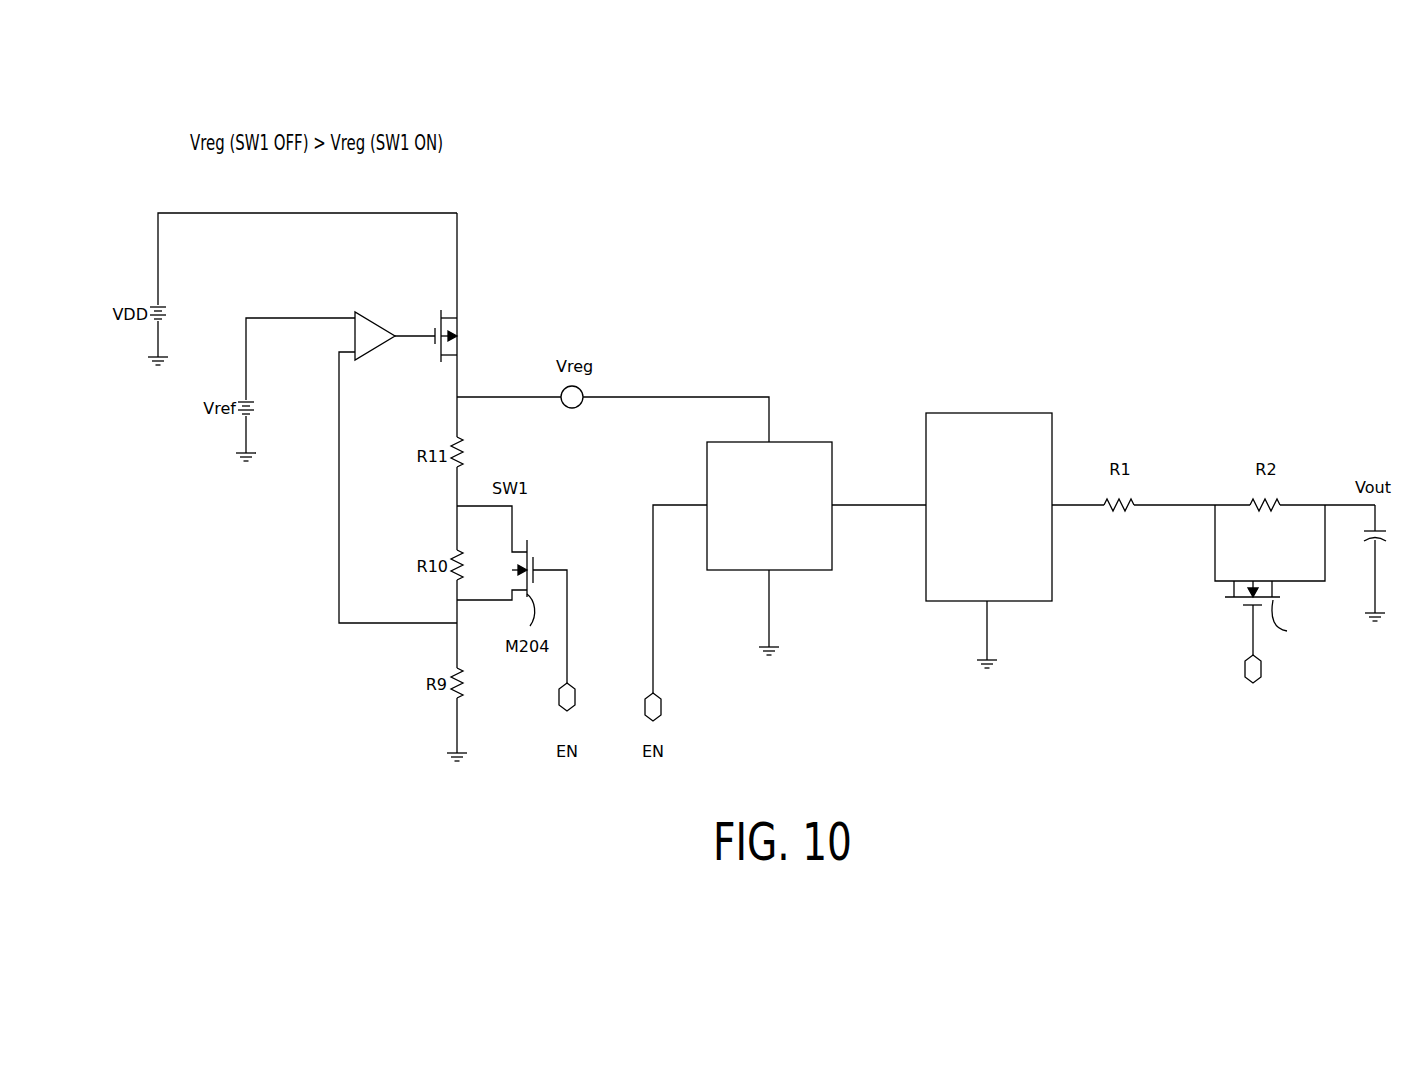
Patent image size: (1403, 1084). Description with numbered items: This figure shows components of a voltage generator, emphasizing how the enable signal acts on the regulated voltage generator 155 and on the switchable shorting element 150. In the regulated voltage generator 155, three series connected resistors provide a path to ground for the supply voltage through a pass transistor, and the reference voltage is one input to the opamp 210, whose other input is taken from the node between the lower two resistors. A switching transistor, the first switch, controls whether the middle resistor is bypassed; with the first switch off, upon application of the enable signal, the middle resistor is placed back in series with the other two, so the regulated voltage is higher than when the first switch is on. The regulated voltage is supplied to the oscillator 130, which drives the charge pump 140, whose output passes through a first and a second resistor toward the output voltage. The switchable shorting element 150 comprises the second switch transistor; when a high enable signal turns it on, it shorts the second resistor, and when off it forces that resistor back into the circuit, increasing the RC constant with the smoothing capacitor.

The regulated voltage generator 155 is at (475, 300).
The opamp 210 is at (377, 348).
The oscillator 130 is at (800, 440).
The charge pump 140 is at (1003, 412).
The switchable shorting element 150 is at (1220, 582).